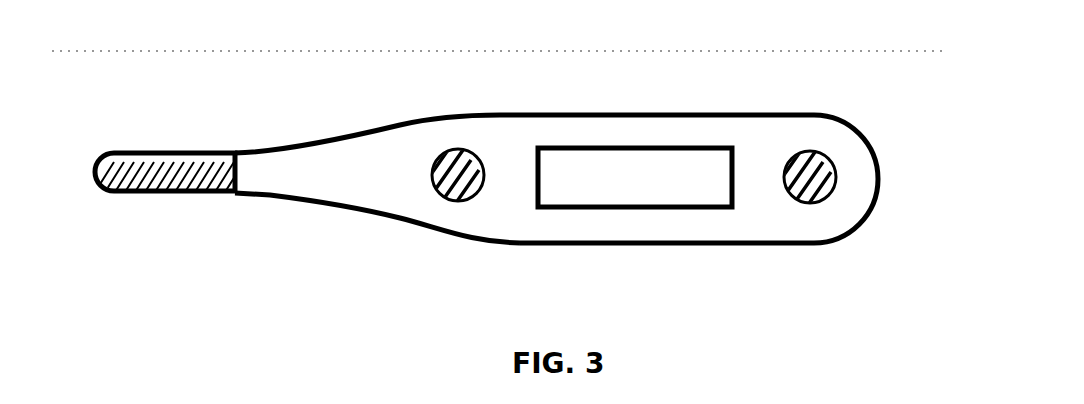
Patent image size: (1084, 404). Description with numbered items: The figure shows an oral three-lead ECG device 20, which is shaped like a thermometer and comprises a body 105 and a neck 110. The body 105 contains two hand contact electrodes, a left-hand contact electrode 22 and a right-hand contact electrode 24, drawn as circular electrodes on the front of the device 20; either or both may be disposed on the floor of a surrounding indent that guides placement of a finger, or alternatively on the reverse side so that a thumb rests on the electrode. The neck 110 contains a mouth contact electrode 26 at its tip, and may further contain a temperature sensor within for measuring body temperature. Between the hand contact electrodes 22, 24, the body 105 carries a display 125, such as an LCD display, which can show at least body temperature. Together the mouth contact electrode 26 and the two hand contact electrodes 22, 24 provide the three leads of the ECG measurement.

The oral 3-lead ECG device 20 is at (807, 80).
The left-hand contact electrode 22 is at (458, 148).
The right-hand contact electrode 24 is at (808, 203).
The mouth contact electrode 26 is at (181, 152).
The body 105 is at (622, 110).
The neck 110 is at (279, 152).
The display 125 is at (638, 185).